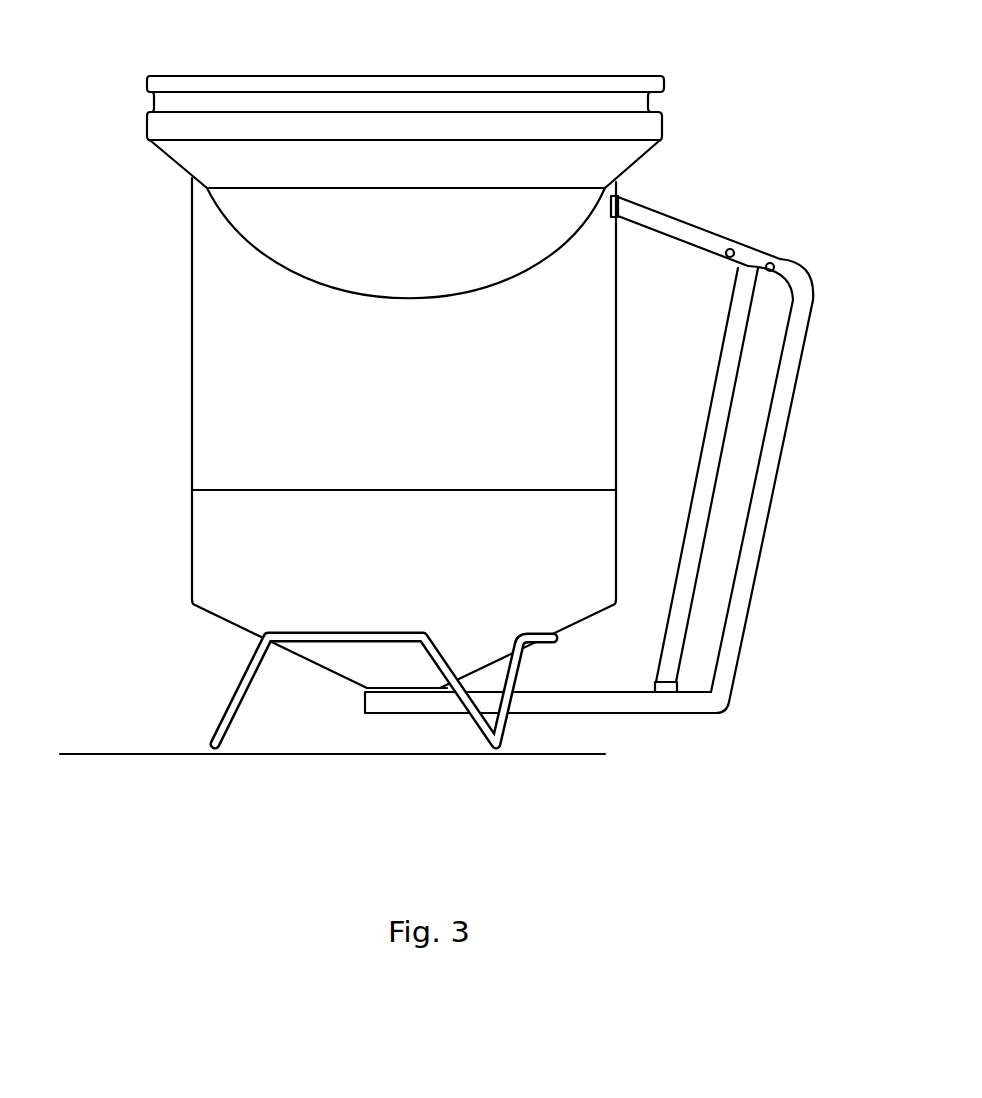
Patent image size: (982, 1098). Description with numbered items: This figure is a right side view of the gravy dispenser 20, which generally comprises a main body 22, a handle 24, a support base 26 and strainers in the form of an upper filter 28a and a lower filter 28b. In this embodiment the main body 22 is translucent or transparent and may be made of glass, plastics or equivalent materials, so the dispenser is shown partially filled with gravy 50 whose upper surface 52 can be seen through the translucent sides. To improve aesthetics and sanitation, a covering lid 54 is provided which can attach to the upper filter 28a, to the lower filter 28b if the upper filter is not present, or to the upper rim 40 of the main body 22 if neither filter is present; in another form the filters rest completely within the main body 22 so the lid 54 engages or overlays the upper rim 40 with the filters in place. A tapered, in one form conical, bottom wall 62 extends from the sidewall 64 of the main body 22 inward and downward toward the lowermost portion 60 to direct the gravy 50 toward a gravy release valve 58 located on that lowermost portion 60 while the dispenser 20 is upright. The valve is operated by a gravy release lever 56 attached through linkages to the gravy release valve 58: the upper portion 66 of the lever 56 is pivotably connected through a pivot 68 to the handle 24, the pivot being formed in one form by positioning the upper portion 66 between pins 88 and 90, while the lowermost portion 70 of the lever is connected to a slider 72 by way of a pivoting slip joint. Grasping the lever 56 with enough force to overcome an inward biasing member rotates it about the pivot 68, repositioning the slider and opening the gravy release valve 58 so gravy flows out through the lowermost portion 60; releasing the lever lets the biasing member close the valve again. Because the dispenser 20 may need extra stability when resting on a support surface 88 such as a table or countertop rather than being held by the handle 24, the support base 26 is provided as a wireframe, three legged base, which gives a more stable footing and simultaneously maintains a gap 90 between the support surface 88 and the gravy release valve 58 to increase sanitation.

The gravy dispenser 20 is at (111, 260).
The main body 22 is at (192, 374).
The handle 24 is at (750, 579).
The support base 26 is at (224, 713).
The upper filter 28a is at (650, 100).
The lower filter 28b is at (660, 133).
The upper rim 40 is at (160, 140).
The gravy 50 is at (207, 517).
The upper surface 52 is at (233, 488).
The covering lid 54 is at (578, 76).
The gravy release lever 56 is at (695, 602).
The gravy release valve 58 is at (395, 703).
The lowermost portion 60 is at (367, 692).
The tapered bottom wall 62 is at (323, 668).
The sidewall 64 is at (192, 552).
The upper portion 66 is at (740, 350).
The pivot 68 is at (752, 256).
The lowermost portion 70 is at (683, 648).
The slider 72 is at (668, 695).
The pin 88 is at (734, 250).
The pin 90 is at (784, 259).